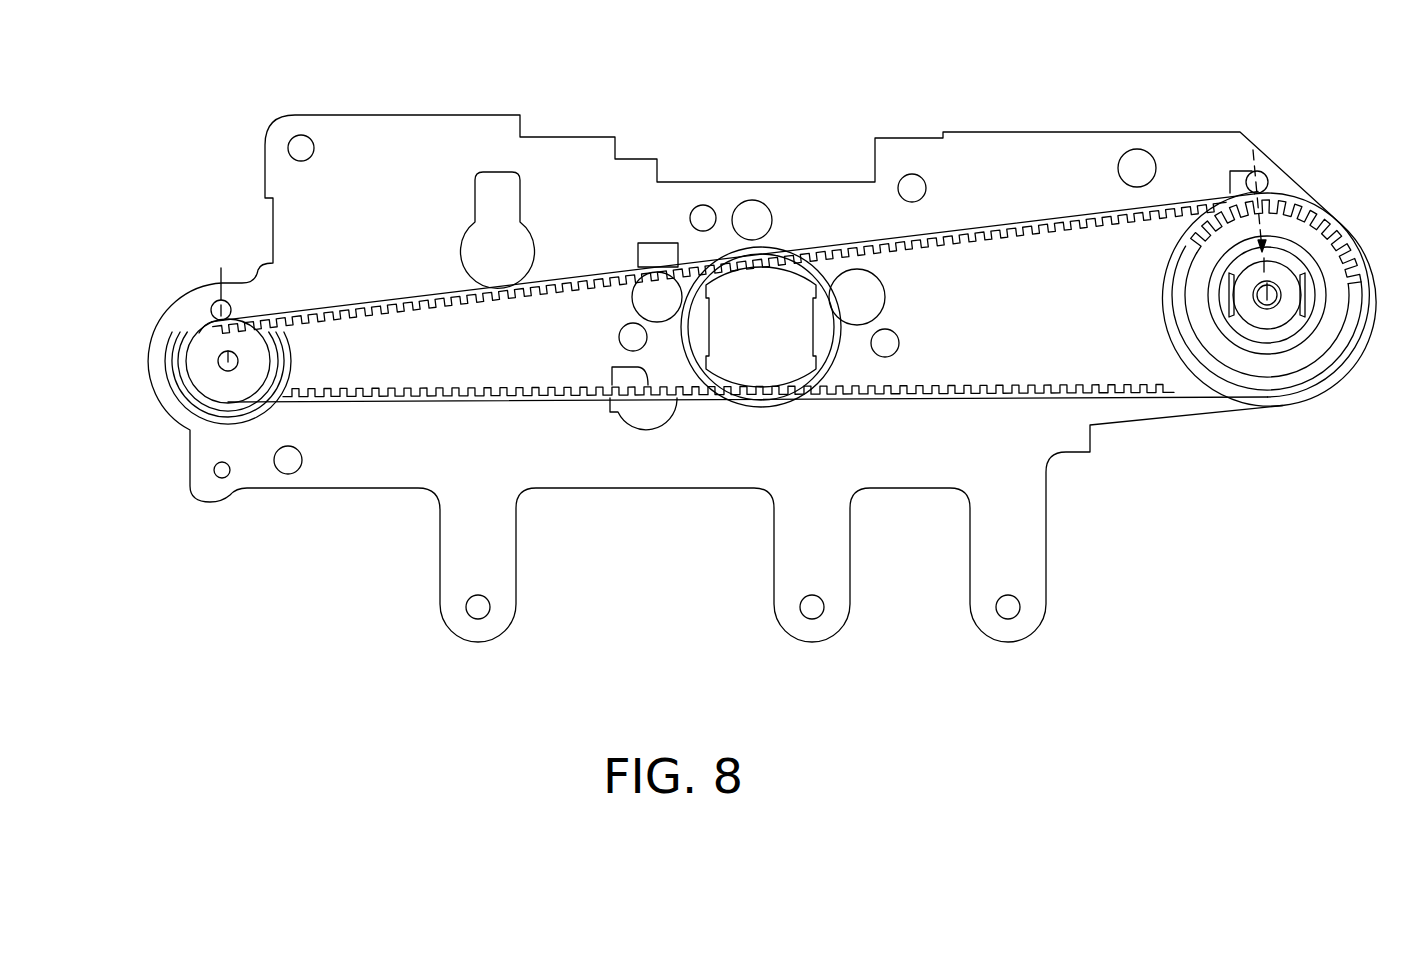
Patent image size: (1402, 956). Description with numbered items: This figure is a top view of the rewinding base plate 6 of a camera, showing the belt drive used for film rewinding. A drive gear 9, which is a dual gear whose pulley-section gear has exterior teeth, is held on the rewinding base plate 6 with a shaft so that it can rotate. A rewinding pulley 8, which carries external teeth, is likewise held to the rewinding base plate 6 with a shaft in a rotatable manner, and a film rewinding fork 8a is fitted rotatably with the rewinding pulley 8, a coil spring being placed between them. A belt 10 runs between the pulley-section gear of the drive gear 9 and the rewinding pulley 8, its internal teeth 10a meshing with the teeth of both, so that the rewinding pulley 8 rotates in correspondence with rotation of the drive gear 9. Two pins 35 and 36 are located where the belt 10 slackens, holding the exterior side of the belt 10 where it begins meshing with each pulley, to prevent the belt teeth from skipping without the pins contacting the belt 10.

The rewinding base plate 6 is at (395, 470).
The rewinding pulley 8 is at (1282, 387).
The film rewinding fork 8a is at (1253, 332).
The drive gear 9 is at (198, 383).
The belt 10 is at (968, 227).
The internal teeth of belt 10a is at (963, 252).
The pin 35 is at (215, 308).
The pin 36 is at (1262, 180).